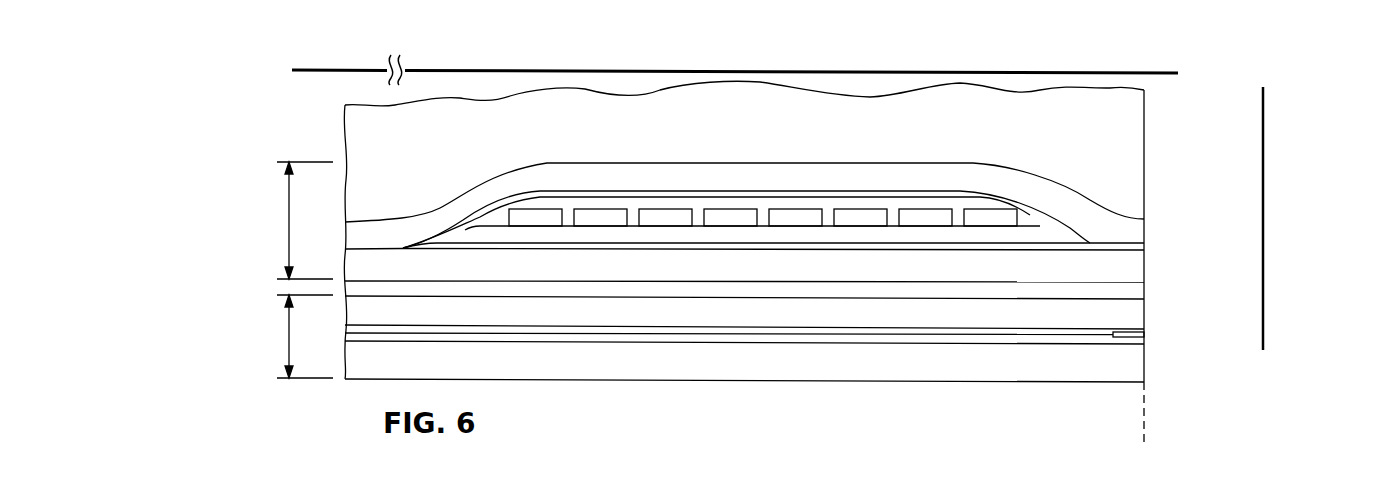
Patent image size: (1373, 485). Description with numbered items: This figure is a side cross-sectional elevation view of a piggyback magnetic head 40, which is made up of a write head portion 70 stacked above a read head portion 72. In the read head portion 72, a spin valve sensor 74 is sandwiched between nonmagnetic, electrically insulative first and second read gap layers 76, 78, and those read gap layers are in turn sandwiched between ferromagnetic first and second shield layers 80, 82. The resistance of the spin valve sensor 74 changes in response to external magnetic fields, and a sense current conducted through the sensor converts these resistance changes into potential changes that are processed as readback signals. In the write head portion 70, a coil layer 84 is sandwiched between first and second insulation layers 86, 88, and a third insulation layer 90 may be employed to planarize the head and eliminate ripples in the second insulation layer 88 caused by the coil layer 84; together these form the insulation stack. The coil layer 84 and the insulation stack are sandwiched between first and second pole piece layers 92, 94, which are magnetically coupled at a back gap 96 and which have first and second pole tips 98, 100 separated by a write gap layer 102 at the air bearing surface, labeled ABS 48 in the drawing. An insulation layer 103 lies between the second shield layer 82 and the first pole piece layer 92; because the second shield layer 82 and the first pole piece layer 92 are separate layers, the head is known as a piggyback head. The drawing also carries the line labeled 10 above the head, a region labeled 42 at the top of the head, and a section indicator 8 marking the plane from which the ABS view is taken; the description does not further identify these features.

The magnetic disk 10 is at (300, 70).
The piggyback magnetic head 40 is at (327, 119).
The overcoat layer 42 is at (1130, 120).
The air bearing surface (ABS) 48 is at (1143, 436).
The write head portion 70 is at (288, 228).
The read head portion 72 is at (288, 340).
The spin valve sensor 74 is at (1144, 336).
The first read gap layer 76 is at (810, 343).
The second read gap layer 78 is at (778, 327).
The first shield layer 80 is at (911, 368).
The second shield layer 82 is at (1017, 317).
The coil layer 84 is at (793, 214).
The first insulation layer 86 is at (703, 235).
The second insulation layer 88 is at (1035, 218).
The third insulation layer 90 is at (573, 193).
The first pole piece layer 92 is at (1063, 272).
The second pole piece layer 94 is at (927, 175).
The back gap 96 is at (383, 247).
The first pole tip 98 is at (1144, 272).
The second pole tip 100 is at (1144, 225).
The write gap layer 102 is at (1144, 248).
The insulation layer 103 is at (970, 292).
The section line 8- 8 is at (1265, 93).